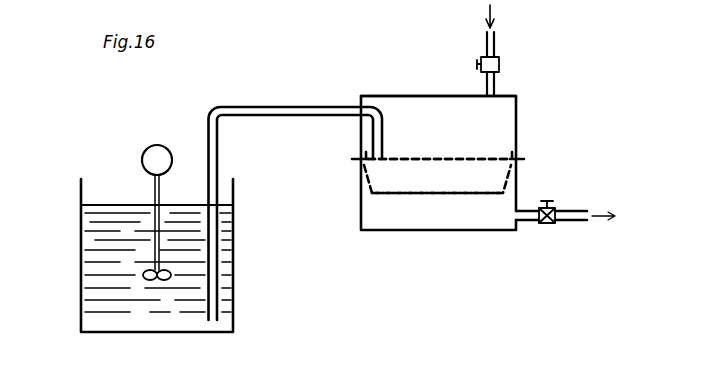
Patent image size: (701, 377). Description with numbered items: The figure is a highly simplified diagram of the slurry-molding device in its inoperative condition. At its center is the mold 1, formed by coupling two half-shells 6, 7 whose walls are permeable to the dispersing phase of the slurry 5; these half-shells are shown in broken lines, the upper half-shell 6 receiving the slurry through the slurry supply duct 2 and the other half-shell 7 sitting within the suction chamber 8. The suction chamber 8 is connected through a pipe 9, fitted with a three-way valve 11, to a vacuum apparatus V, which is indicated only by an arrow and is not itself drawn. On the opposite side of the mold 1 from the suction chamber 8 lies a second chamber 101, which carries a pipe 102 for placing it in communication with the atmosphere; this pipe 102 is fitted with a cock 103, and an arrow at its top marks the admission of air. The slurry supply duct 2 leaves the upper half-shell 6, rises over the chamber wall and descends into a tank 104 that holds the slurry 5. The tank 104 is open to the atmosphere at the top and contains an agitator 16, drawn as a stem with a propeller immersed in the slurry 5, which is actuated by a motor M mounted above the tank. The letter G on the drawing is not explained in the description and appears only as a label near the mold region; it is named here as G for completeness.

The mold 1 is at (478, 158).
The slurry supply duct 2 is at (277, 112).
The slurry 5 is at (97, 225).
The upper half-shell 6 is at (490, 159).
The half-shell 7 is at (393, 195).
The suction chamber 8 is at (416, 232).
The pipe 9 is at (525, 222).
The three-way valve 11 is at (549, 223).
The agitator 16 is at (153, 247).
The second chamber 101 is at (405, 95).
The pipe 102 is at (486, 43).
The cock 103 is at (498, 66).
The tank 104 is at (80, 286).
The motor M is at (150, 155).
The basin G is at (382, 180).
The vacuum apparatus V is at (613, 217).